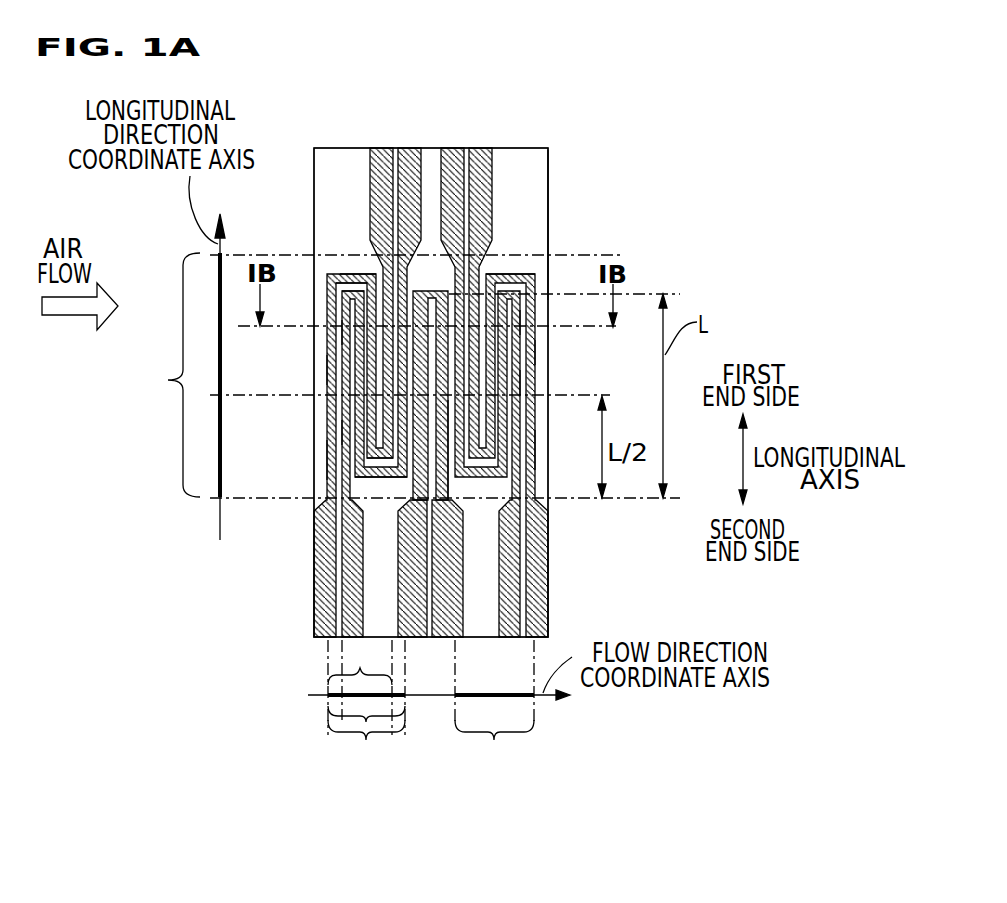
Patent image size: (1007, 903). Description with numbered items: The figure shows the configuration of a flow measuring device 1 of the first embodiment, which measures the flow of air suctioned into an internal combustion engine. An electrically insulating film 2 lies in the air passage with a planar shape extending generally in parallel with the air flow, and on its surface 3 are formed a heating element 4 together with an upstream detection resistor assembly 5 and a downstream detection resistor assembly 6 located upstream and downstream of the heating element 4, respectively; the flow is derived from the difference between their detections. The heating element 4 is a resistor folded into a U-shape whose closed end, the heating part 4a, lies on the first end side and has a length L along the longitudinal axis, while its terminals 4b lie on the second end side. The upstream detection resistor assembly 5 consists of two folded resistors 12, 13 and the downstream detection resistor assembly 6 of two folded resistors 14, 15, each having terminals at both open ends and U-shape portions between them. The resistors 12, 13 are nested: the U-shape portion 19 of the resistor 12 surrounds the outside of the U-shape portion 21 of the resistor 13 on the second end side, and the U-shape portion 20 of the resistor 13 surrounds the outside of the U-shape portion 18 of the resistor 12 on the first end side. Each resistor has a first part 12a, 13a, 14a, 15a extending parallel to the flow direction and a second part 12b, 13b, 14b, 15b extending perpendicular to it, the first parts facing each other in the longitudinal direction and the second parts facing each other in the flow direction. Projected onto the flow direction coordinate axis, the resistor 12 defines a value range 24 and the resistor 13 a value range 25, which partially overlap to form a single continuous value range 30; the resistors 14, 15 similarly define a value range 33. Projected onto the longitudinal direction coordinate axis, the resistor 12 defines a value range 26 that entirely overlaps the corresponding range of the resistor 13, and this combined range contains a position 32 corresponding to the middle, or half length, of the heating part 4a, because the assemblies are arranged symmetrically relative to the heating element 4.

The flow measuring device 1 is at (563, 129).
The electrically insulating film 2 is at (548, 152).
The surface 3 is at (534, 204).
The heating element 4 is at (434, 287).
The heating part 4a is at (450, 487).
The terminals 4b is at (413, 636).
The upstream detection resistor assembly 5 is at (320, 468).
The downstream detection resistor assembly 6 is at (538, 442).
The resistor 12 is at (407, 272).
The first part 12a is at (346, 332).
The second part 12b is at (343, 432).
The resistor 13 is at (368, 272).
The first part 13a is at (347, 290).
The second part 13b is at (329, 370).
The resistor 14 is at (522, 552).
The first part 14a is at (521, 324).
The second part 14b is at (521, 378).
The resistor 15 is at (529, 510).
The first part 15a is at (527, 278).
The second part 15b is at (534, 350).
The U-shape portion 18 is at (353, 282).
The U-shape portion 19 is at (370, 478).
The U-shape portion 20 is at (351, 273).
The U-shape portion 21 is at (383, 468).
The value range 24 is at (356, 720).
The value range 25 is at (357, 664).
The value range 26 is at (176, 388).
The value range 30 is at (366, 746).
The position 32 is at (223, 396).
The value range 33 is at (494, 747).